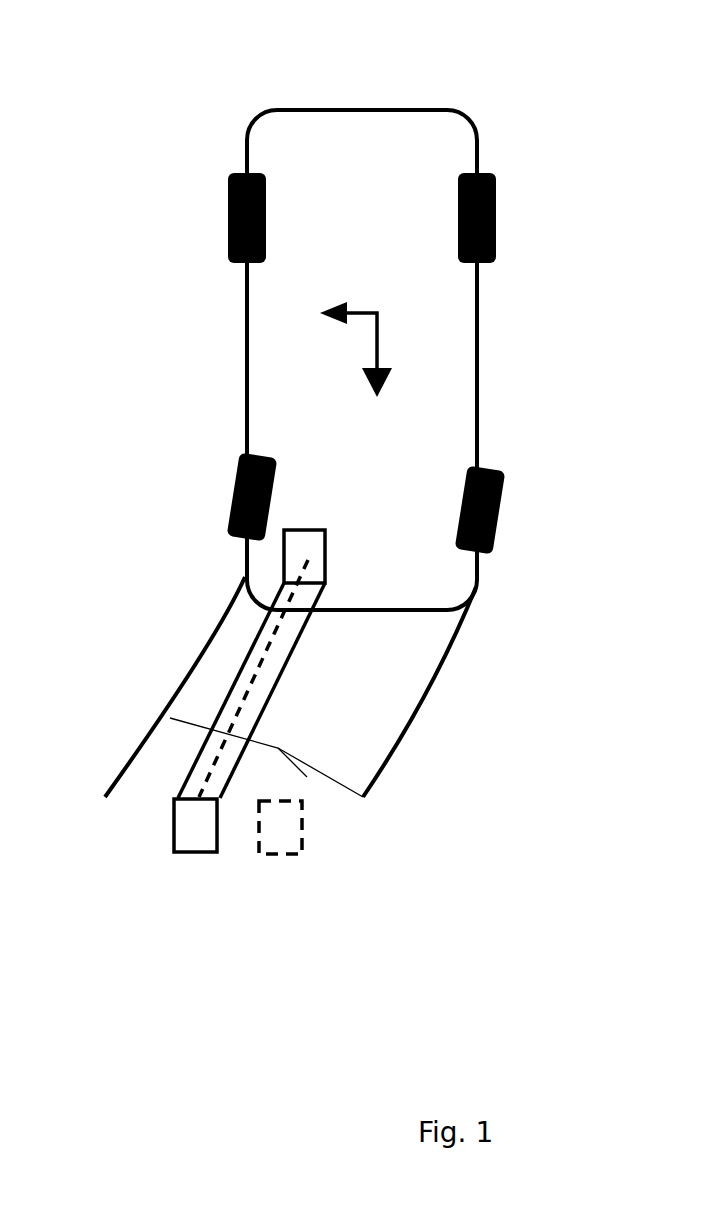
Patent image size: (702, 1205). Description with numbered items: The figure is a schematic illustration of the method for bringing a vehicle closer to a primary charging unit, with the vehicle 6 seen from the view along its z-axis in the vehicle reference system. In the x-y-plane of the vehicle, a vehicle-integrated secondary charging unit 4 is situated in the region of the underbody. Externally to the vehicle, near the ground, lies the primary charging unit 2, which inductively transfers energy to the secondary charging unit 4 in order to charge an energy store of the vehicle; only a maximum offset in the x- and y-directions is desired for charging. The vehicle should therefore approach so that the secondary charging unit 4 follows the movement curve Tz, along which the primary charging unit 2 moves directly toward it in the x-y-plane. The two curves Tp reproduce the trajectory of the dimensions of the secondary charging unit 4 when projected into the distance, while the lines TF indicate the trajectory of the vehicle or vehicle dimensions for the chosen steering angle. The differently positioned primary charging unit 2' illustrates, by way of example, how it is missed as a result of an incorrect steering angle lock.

The vehicle 6 is at (319, 311).
The secondary charging unit 4 is at (362, 518).
The primary charging unit 2 is at (132, 886).
The primary charging unit 2' is at (226, 898).
The curves of the trajectory of the secondary charging unit dimensions Tp is at (178, 644).
The movement curve Tz is at (275, 679).
The lines of the vehicle trajectory TF is at (363, 797).